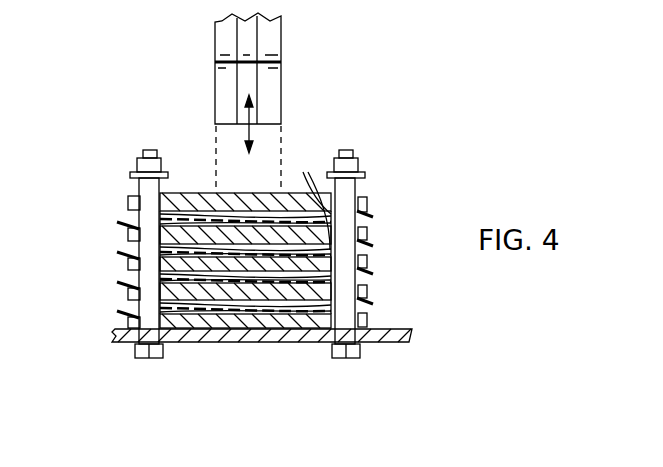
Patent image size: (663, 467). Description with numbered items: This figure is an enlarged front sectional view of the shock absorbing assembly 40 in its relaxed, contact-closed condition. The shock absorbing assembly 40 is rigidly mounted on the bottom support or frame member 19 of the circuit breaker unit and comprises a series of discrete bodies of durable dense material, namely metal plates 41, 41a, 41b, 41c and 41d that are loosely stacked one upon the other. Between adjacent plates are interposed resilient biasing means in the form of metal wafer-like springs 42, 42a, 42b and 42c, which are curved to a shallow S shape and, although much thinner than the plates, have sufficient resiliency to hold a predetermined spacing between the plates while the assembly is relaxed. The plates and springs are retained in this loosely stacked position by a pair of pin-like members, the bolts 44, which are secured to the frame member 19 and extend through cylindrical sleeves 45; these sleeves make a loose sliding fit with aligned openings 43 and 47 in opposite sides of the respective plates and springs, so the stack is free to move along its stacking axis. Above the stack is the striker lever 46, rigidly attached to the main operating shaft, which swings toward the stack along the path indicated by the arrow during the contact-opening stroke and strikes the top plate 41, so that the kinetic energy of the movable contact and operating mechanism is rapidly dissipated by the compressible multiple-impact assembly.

The bottom support or frame member 19 is at (236, 332).
The shock absorbing assembly 40 is at (100, 389).
The metal plate 41 is at (128, 204).
The metal plate 41a is at (128, 236).
The metal plate 41b is at (128, 264).
The metal plate 41c is at (128, 293).
The metal plate 41d is at (178, 330).
The metal wafer-like spring 42 is at (363, 214).
The metal wafer-like spring 42a is at (365, 244).
The metal wafer-like spring 42b is at (363, 272).
The metal wafer-like spring 42c is at (363, 301).
The aligned opening 43 is at (311, 197).
The bolt 44 is at (138, 150).
The cylindrical sleeve 45 is at (140, 186).
The striker lever 46 is at (268, 88).
The aligned opening 47 is at (331, 276).